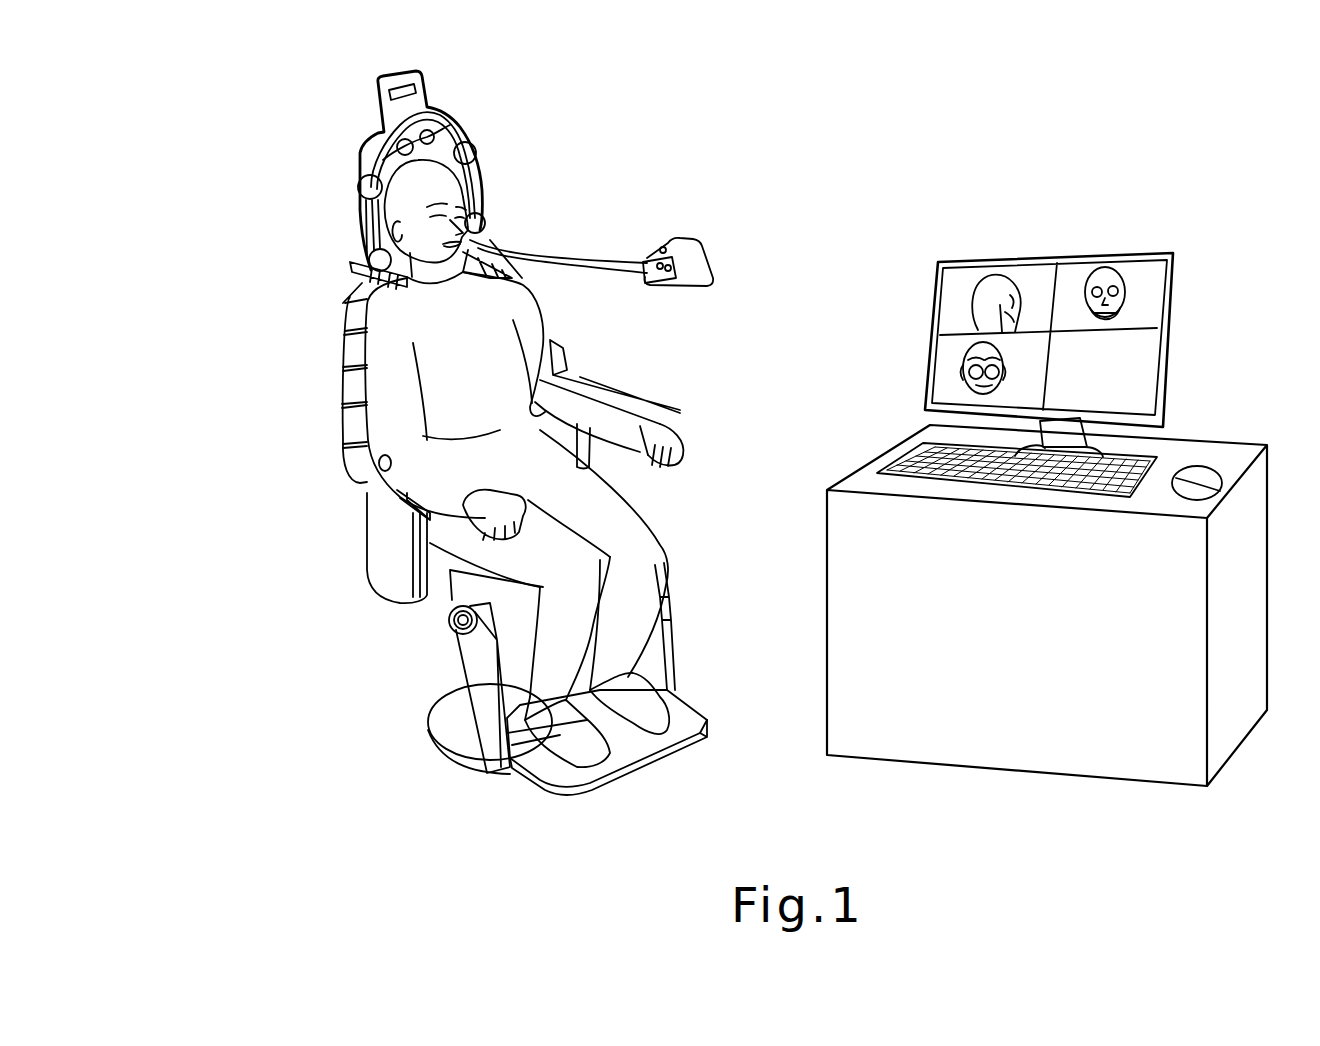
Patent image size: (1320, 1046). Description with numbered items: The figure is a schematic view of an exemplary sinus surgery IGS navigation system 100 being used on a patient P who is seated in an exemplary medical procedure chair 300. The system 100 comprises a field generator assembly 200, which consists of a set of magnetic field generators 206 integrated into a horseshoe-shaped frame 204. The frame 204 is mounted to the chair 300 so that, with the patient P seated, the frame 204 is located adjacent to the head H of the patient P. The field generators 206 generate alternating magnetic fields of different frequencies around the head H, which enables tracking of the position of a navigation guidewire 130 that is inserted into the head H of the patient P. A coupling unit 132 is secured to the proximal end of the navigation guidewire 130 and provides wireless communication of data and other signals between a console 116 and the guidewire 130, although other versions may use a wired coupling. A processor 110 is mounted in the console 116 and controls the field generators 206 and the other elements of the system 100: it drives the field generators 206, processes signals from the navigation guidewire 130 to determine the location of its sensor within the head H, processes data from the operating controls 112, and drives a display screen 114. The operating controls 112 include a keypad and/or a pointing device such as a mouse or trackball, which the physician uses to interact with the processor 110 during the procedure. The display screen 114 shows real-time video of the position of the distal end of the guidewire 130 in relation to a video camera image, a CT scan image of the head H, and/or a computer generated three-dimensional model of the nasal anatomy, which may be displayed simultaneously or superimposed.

The IGS navigation system 100 is at (1075, 120).
The processor 110 is at (897, 412).
The operating controls 112 is at (892, 458).
The display screen 114 is at (1148, 250).
The console 116 is at (1238, 452).
The navigation guidewire 130 is at (500, 240).
The coupling unit 132 is at (687, 238).
The field generator assembly 200 is at (356, 135).
The horseshoe-shaped frame 204 is at (447, 108).
The magnetic field generators 206 is at (474, 147).
The chair 300 is at (323, 700).
The patient P is at (578, 172).
The head H is at (473, 188).